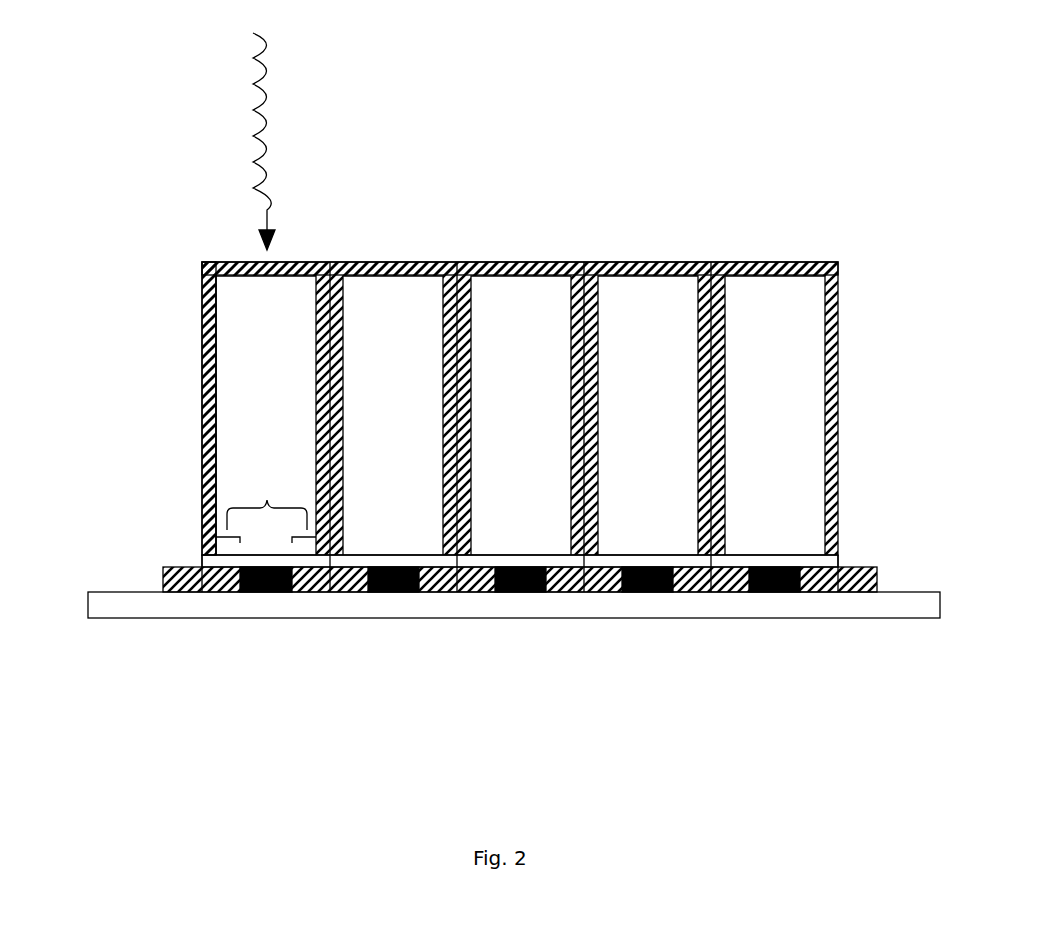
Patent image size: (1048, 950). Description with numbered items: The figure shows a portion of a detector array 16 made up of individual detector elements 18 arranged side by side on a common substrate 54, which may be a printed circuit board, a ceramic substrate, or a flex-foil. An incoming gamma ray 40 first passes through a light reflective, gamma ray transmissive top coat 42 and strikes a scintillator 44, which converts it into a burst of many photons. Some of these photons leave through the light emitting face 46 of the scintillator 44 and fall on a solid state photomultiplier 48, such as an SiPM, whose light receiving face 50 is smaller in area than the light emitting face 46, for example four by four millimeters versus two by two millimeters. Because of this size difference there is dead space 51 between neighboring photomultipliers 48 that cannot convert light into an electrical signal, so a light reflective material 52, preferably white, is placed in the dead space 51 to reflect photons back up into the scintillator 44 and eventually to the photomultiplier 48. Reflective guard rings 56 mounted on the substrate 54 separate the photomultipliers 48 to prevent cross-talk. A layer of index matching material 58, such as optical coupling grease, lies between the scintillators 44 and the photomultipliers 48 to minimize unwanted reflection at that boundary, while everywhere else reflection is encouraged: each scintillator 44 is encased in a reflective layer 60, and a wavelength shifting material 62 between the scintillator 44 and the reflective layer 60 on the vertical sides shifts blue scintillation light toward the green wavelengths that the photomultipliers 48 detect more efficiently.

The detector array 16 is at (1000, 242).
The detector element 18 is at (294, 245).
The gamma ray 40 is at (273, 167).
The top coat 42 is at (408, 262).
The scintillator 44 is at (228, 340).
The light emitting face 46 is at (303, 560).
The photomultiplier 48 is at (528, 592).
The light receiving face 50 is at (788, 565).
The dead space 51 is at (268, 497).
The light reflective material 52 is at (228, 590).
The substrate 54 is at (934, 592).
The reflective guard ring 56 is at (867, 592).
The index matching layer 58 is at (240, 563).
The reflective layer 60 is at (203, 453).
The wavelength shifting material 62 is at (203, 530).